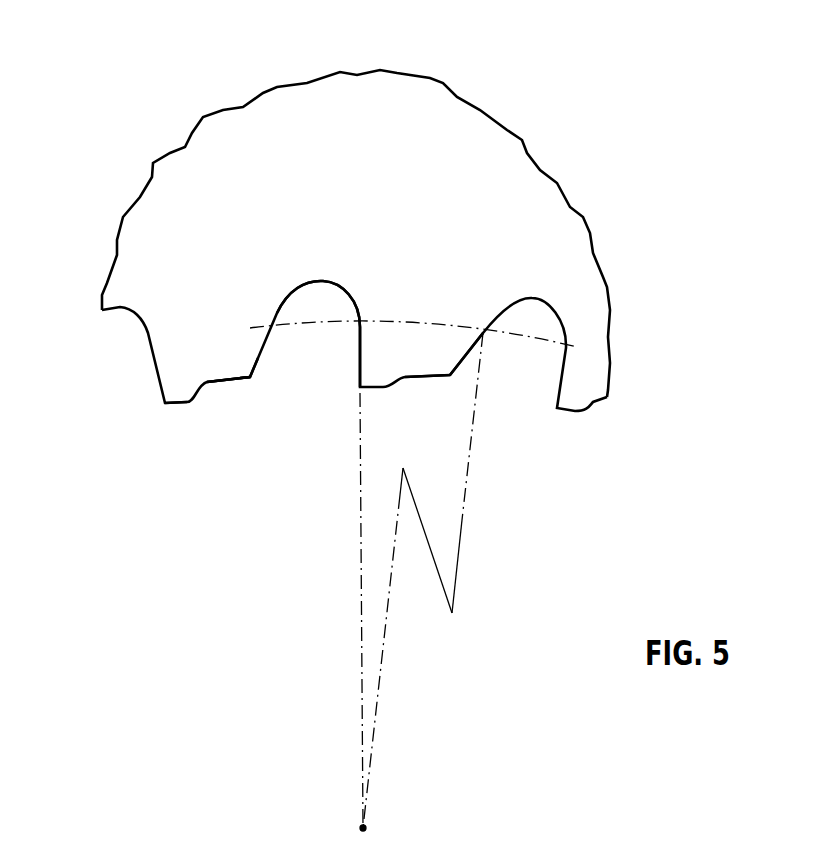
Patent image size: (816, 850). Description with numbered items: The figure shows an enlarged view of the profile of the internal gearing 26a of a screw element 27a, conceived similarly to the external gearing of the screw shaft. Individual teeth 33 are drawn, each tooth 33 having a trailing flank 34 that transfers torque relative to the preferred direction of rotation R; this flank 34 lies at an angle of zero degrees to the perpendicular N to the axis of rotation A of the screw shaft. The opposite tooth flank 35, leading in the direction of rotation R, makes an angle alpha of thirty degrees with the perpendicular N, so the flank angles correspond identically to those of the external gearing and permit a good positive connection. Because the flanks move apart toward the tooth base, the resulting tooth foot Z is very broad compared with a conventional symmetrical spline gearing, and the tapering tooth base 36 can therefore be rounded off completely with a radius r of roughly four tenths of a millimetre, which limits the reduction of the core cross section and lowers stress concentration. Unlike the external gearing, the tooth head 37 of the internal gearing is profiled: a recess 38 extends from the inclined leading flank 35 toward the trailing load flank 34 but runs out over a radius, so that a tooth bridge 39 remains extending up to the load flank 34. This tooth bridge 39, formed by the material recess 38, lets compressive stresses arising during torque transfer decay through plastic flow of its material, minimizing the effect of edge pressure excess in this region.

The internal gearing 26a is at (512, 254).
The screw element 27a is at (502, 143).
The tooth 33 is at (208, 365).
The trailing flank 34 is at (368, 335).
The leading tooth flank 35 is at (464, 338).
The tooth base 36 is at (325, 293).
The tooth head 37 is at (234, 405).
The recess 38 is at (242, 382).
The tooth bridge 39 is at (175, 407).
The preferred direction of rotation R is at (425, 42).
The tooth foot Z is at (318, 282).
The radius r is at (543, 320).
The angle alpha is at (492, 378).
The perpendicular N is at (462, 540).
The axis of rotation A is at (368, 828).